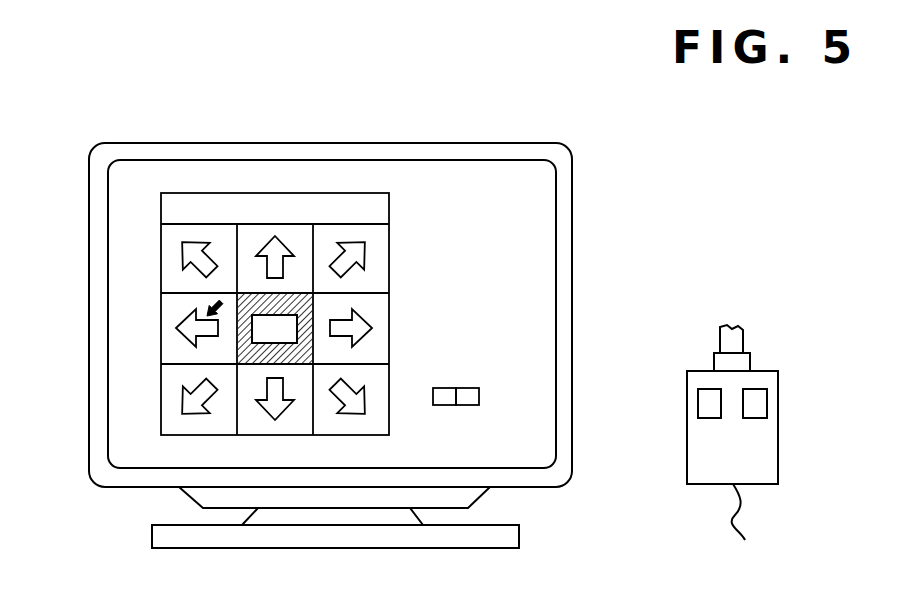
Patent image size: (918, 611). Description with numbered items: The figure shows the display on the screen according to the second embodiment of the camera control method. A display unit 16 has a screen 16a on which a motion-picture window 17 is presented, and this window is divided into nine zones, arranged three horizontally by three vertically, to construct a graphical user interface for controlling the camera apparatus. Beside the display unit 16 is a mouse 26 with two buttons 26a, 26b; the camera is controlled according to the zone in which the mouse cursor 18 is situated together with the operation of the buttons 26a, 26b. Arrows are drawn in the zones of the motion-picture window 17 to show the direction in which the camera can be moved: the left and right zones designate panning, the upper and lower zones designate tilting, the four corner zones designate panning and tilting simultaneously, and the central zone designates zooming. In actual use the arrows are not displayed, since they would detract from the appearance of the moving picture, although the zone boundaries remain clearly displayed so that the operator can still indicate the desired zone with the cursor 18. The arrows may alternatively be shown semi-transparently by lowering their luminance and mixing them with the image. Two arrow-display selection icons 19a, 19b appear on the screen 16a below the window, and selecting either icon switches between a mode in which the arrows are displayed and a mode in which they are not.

The display unit 16 is at (563, 210).
The screen 16a is at (412, 173).
The motion-picture window 17 is at (377, 313).
The mouse cursor 18 is at (207, 316).
The arrow-display selection icon 19a is at (443, 405).
The arrow-display selection icon 19b is at (468, 405).
The mouse 26 is at (760, 467).
The button 26a is at (707, 412).
The button 26b is at (758, 402).